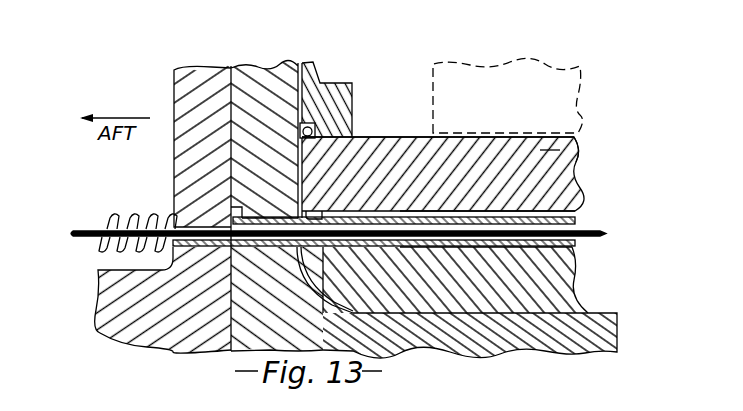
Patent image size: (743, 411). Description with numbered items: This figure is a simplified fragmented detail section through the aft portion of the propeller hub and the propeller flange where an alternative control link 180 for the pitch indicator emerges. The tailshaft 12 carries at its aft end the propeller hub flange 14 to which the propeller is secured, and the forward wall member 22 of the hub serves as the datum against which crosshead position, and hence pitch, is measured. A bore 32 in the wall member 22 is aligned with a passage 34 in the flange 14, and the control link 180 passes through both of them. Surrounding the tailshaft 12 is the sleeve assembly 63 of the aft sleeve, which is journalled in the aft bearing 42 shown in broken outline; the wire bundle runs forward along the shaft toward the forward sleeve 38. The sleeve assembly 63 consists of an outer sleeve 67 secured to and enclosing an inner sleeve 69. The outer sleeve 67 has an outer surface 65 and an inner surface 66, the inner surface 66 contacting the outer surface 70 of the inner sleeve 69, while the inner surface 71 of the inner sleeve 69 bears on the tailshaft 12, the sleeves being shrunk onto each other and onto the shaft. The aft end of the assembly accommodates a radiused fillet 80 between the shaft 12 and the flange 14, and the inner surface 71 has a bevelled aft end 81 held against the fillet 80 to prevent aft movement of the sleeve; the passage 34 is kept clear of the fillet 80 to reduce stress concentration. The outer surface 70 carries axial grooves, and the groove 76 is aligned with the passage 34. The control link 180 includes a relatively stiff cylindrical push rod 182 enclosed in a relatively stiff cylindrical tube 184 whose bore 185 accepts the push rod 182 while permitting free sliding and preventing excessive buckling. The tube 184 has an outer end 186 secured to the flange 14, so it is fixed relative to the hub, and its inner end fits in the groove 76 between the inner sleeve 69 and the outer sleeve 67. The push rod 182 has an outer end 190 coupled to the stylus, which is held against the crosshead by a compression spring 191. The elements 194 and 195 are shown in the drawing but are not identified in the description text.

The tailshaft 12 is at (592, 333).
The propeller hub flange 14 is at (318, 81).
The forward wall member 22 is at (174, 97).
The bore 32 is at (211, 246).
The passage 34 is at (290, 247).
The forward sleeve 38 is at (591, 135).
The aft bearing 42 is at (580, 83).
The sleeve assembly 63 is at (588, 186).
The outer surface of outer sleeve 65 is at (410, 112).
The inner surface of outer sleeve 66 is at (332, 195).
The outer sleeve 67 is at (562, 158).
The inner sleeve 69 is at (559, 282).
The outer surface of inner sleeve 70 is at (455, 210).
The inner surface of inner sleeve 71 is at (433, 314).
The axial groove 76 is at (573, 216).
The radiused fillet 80 is at (330, 310).
The bevelled aft end 81 is at (322, 307).
The control link 180 is at (606, 247).
The push rod 182 is at (618, 233).
The tube 184 is at (310, 262).
The bore of tube 185 is at (413, 243).
The outer end of tube 186 is at (244, 213).
The outer end of push rod 190 is at (93, 200).
The compression spring 191 is at (102, 249).
The seal 194 is at (302, 131).
The wedge block 195 is at (352, 92).